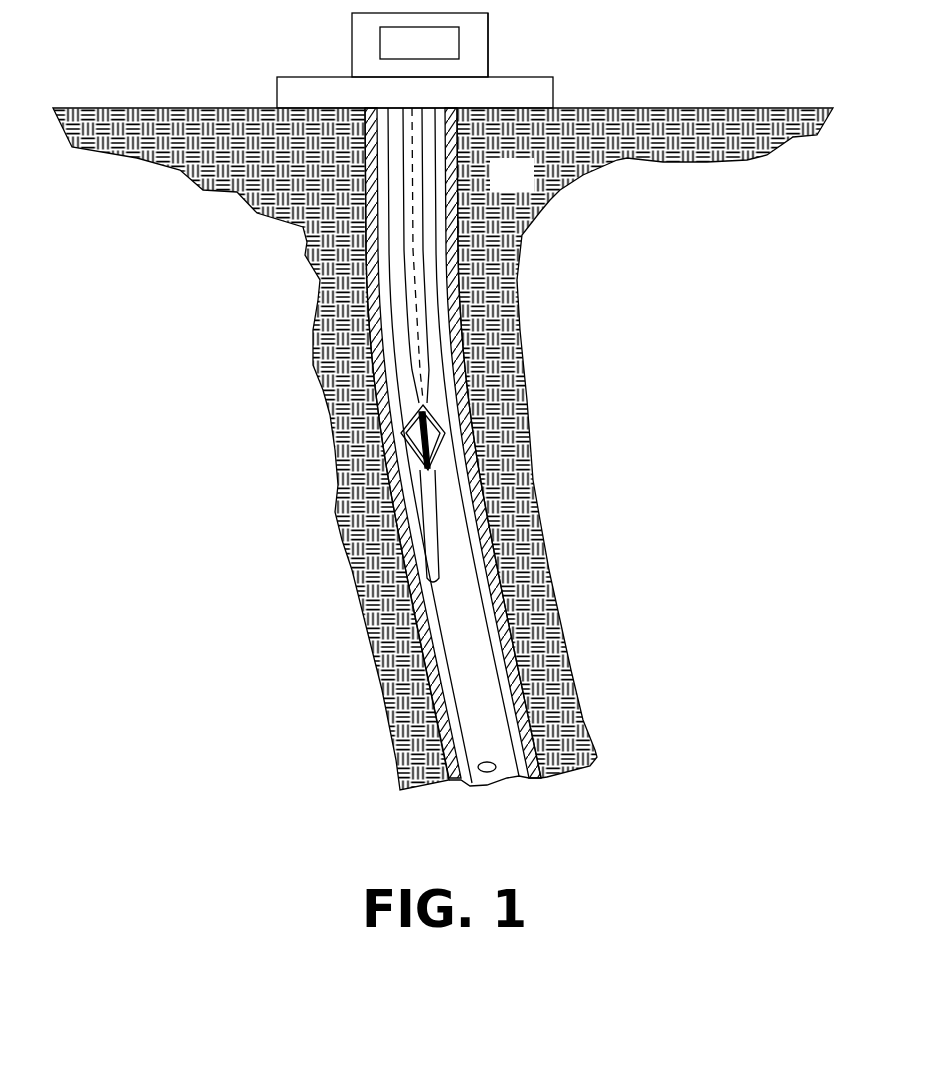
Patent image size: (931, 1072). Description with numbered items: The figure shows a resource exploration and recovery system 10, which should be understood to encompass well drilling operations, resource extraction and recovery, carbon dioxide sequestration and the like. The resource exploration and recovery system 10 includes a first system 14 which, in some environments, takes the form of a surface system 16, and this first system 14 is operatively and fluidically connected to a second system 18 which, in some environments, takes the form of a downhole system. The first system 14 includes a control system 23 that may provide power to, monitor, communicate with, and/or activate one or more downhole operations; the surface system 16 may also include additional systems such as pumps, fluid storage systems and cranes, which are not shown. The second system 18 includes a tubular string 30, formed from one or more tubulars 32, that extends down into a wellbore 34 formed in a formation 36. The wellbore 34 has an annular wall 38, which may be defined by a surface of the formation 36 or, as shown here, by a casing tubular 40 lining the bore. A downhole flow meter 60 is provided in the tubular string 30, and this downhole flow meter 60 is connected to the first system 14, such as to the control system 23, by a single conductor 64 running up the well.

The resource exploration and recovery system 10 is at (650, 78).
The first system 14 is at (323, 33).
The surface system 16 is at (492, 45).
The second system 18 is at (155, 282).
The control system 23 is at (393, 47).
The tubular string 30 is at (388, 340).
The tubulars 32 is at (386, 234).
The wellbore 34 is at (441, 268).
The formation 36 is at (528, 188).
The annular wall 38 is at (458, 307).
The casing tubular 40 is at (458, 395).
The downhole flow meter 60 is at (406, 462).
The single conductor 64 is at (410, 377).